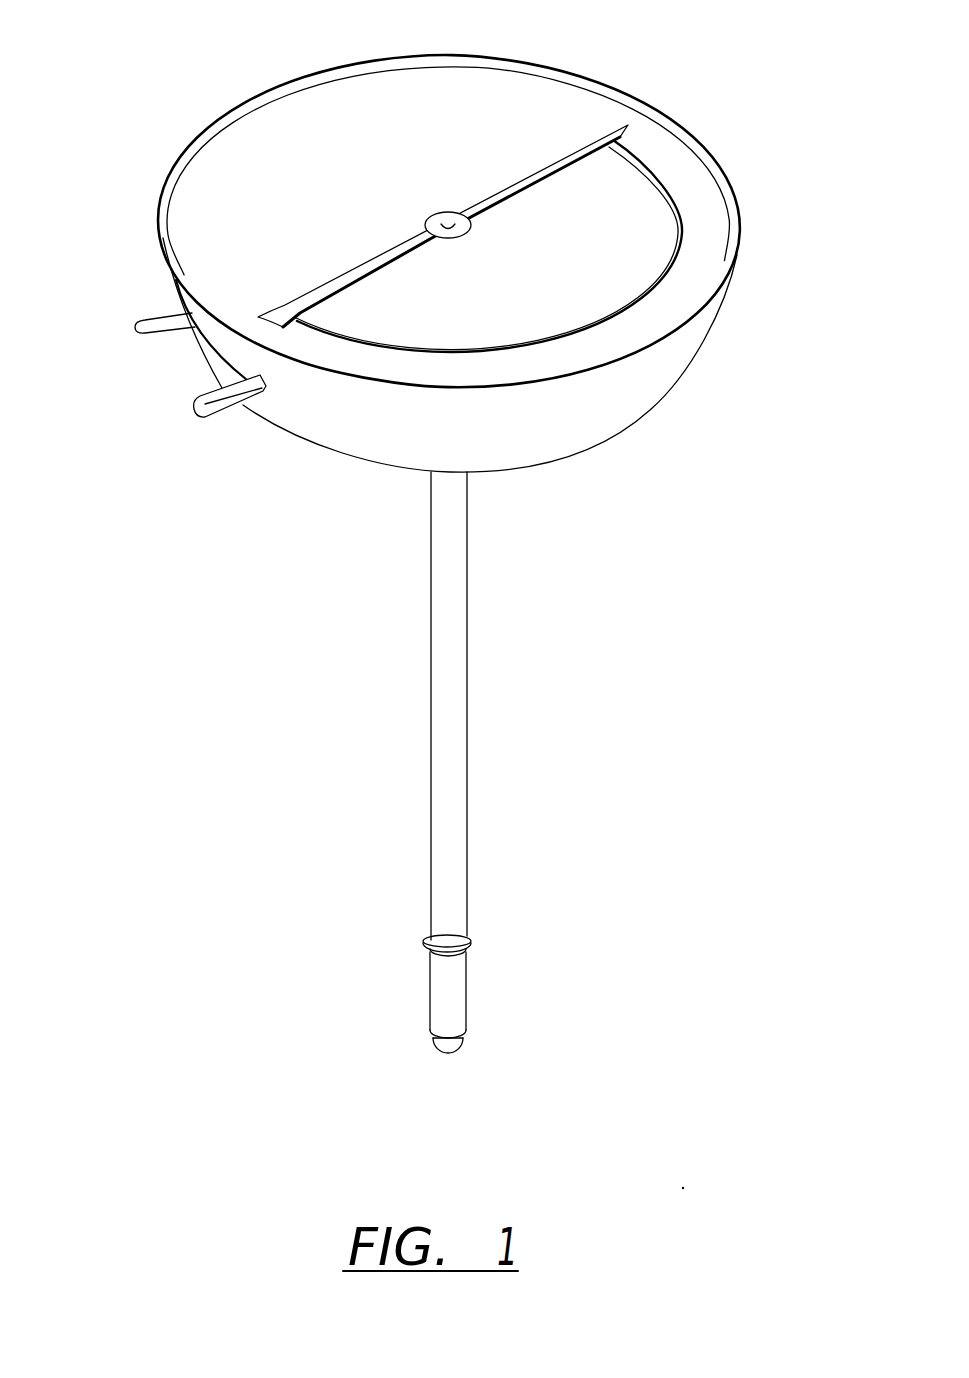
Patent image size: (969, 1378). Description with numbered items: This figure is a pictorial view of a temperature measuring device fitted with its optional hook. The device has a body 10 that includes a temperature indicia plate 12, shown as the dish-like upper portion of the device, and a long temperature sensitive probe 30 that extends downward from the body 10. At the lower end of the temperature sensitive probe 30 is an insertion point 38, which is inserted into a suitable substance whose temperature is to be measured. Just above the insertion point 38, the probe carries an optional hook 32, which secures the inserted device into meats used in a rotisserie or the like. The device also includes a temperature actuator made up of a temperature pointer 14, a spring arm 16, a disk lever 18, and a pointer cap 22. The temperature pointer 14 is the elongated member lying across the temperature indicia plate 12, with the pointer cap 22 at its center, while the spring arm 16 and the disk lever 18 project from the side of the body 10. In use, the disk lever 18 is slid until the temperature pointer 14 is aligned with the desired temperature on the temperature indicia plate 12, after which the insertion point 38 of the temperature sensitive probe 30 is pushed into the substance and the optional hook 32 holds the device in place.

The body 10 is at (389, 609).
The temperature indicia plate 12 is at (315, 127).
The temperature pointer 14 is at (577, 157).
The spring arm 16 is at (157, 322).
The disk lever 18 is at (212, 413).
The pointer cap 22 is at (452, 220).
The temperature sensitive probe 30 is at (468, 660).
The optional hook 32 is at (472, 938).
The insertion point 38 is at (447, 1047).